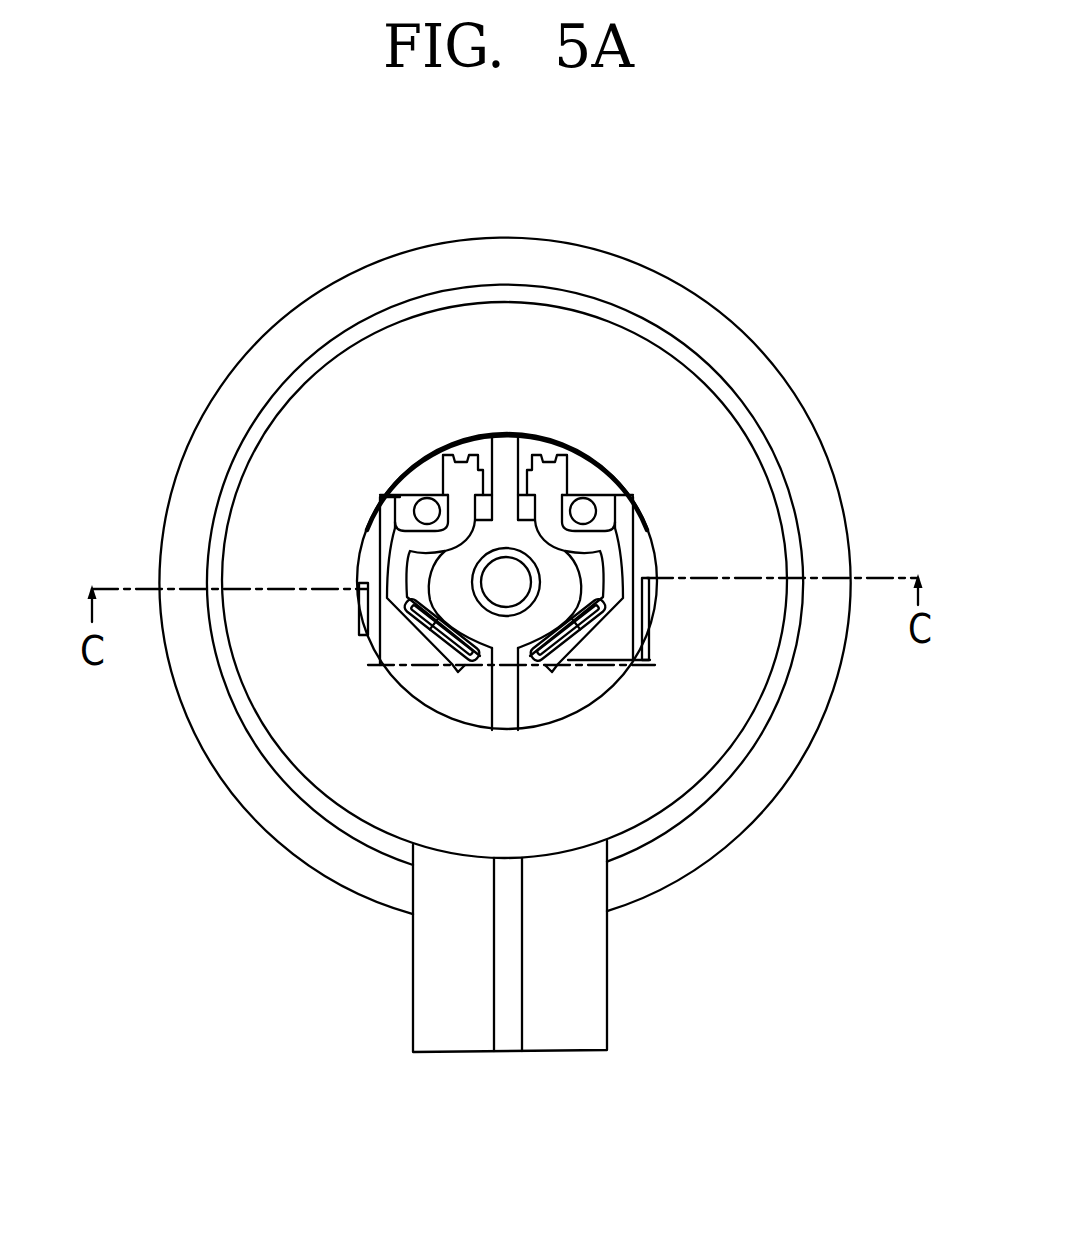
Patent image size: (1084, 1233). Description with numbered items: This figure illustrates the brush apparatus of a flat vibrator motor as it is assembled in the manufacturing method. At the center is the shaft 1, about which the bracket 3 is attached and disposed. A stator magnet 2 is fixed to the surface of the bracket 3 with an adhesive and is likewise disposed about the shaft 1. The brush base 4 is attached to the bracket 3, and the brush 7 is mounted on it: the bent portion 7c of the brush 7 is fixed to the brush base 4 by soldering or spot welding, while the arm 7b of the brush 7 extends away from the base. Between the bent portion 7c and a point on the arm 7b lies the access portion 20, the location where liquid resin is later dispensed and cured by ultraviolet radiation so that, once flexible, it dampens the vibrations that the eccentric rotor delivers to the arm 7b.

The shaft 1 is at (507, 582).
The stator magnet 2 is at (407, 780).
The bracket 3 is at (230, 768).
The brush base 4 is at (395, 650).
The brush 7 is at (633, 653).
The arm 7b is at (603, 567).
The bent portion 7c is at (548, 495).
The access portion 20 is at (427, 516).